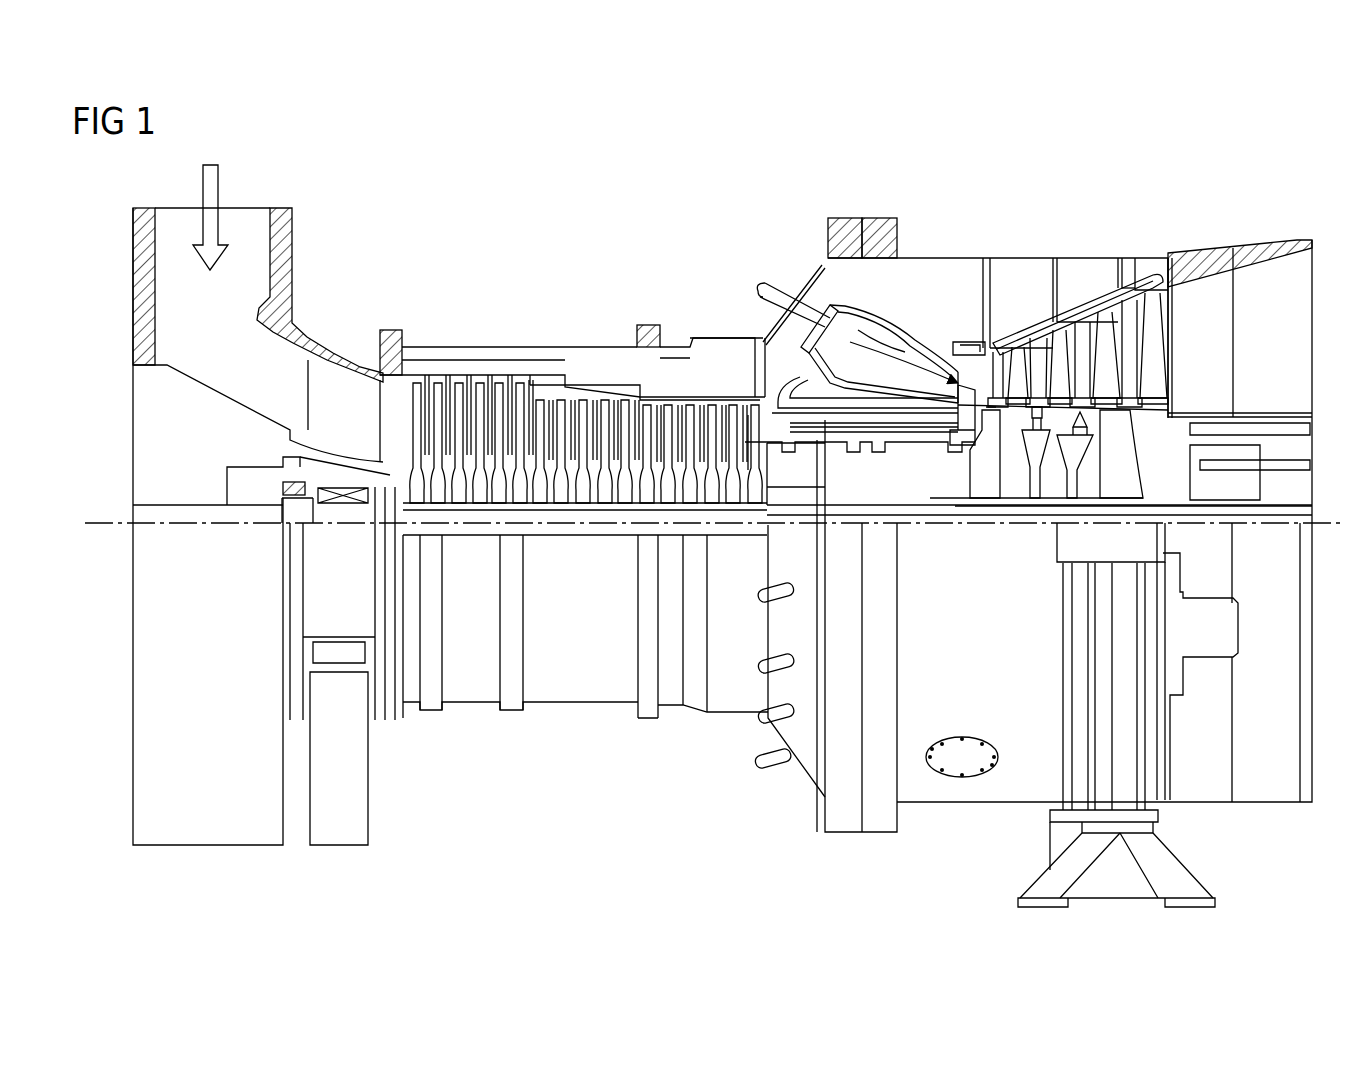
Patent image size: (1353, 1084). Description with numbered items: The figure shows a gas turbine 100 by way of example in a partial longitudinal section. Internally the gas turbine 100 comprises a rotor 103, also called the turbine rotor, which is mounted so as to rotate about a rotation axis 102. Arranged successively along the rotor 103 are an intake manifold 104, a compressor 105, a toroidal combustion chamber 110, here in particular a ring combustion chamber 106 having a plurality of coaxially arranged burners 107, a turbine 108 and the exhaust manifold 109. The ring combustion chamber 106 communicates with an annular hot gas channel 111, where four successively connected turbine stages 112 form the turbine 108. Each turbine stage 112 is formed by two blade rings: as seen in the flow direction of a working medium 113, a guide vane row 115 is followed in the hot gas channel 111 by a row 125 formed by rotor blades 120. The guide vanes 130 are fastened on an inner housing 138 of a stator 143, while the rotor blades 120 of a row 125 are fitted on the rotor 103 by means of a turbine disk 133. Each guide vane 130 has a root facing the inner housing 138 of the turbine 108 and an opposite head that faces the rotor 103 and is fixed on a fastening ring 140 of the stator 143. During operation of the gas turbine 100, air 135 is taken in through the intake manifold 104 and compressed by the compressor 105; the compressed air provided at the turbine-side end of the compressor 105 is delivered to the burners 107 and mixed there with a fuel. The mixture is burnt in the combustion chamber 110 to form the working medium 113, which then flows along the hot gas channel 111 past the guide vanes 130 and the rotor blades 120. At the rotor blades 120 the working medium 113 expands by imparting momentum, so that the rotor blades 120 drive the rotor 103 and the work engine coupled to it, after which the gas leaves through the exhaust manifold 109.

The gas turbine 100 is at (583, 216).
The rotation axis 102 is at (100, 518).
The rotor 103 is at (838, 496).
The intake manifold 104 is at (296, 250).
The compressor 105 is at (478, 312).
The ring combustion chamber 106 is at (935, 338).
The burners 107 is at (760, 297).
The turbine 108 is at (970, 205).
The exhaust manifold 109 is at (1210, 262).
The combustion chamber 110 is at (808, 270).
The hot gas channel 111 is at (1140, 328).
The turbine stages 112 is at (1115, 210).
The working medium 113 is at (887, 328).
The guide vane row 115 is at (1087, 290).
The rotor blades 120 is at (1060, 390).
The row 125 is at (1140, 265).
The guide vanes 130 is at (1100, 362).
The turbine disk 133 is at (1145, 470).
The air 135 is at (223, 185).
The inner housing 138 is at (1022, 290).
The fastening ring 140 is at (952, 435).
The stator 143 is at (932, 252).